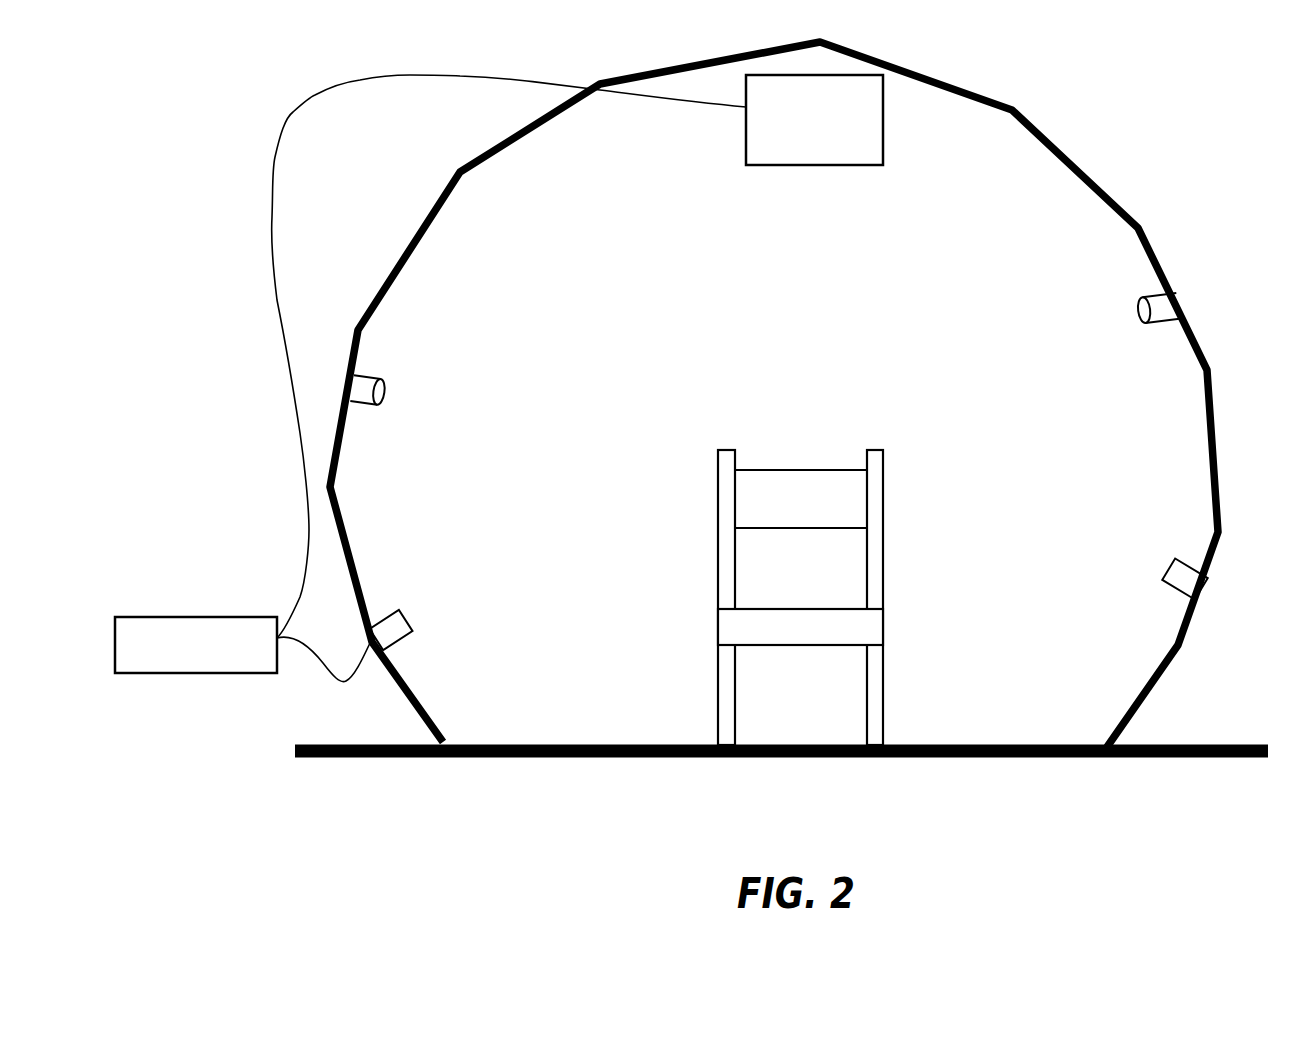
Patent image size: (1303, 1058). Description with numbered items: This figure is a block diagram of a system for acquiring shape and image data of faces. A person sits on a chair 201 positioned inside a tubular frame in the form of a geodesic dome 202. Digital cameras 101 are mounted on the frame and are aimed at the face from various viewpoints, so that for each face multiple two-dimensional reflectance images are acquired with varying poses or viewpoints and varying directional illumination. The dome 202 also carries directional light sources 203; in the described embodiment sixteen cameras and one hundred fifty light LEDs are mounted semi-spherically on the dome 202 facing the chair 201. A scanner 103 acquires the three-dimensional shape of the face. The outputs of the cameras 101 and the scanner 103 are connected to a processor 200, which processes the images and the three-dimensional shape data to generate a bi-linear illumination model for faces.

The cameras 101 is at (410, 620).
The scanner 103 is at (885, 148).
The processor 200 is at (138, 617).
The chair 201 is at (883, 458).
The geodesic dome 202 is at (1022, 118).
The directional light sources 203 is at (382, 378).